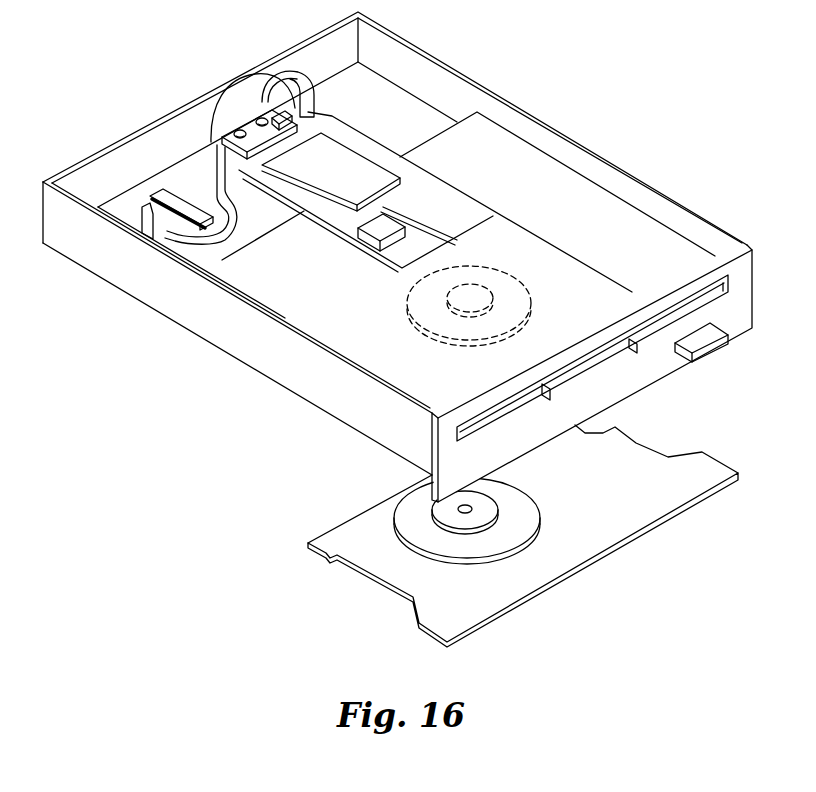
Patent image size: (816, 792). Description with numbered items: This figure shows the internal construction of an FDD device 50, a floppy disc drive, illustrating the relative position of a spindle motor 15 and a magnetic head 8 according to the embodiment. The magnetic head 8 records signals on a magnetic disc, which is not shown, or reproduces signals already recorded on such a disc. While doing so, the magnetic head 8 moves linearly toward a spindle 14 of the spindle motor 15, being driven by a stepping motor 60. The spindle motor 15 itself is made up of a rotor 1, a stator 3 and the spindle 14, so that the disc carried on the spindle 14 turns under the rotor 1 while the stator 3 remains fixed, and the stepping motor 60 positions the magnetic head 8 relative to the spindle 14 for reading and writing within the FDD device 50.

The rotor 1 is at (440, 540).
The stator 3 is at (640, 452).
The magnetic head 8 is at (386, 216).
The spindle 14 is at (443, 512).
The spindle motor 15 is at (523, 532).
The FDD device 50 is at (612, 142).
The stepping motor 60 is at (243, 103).